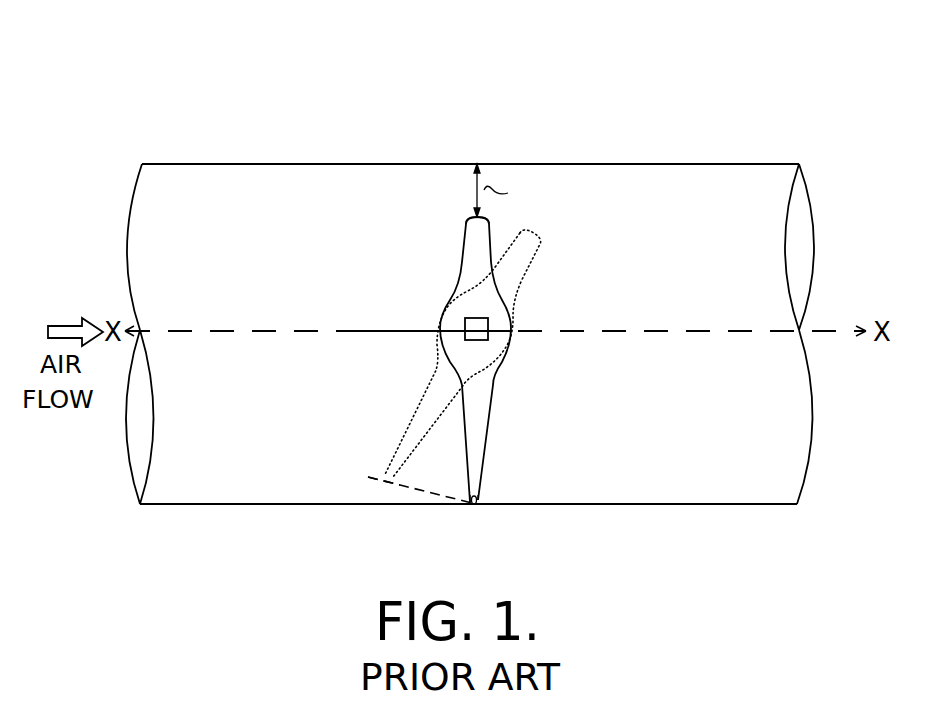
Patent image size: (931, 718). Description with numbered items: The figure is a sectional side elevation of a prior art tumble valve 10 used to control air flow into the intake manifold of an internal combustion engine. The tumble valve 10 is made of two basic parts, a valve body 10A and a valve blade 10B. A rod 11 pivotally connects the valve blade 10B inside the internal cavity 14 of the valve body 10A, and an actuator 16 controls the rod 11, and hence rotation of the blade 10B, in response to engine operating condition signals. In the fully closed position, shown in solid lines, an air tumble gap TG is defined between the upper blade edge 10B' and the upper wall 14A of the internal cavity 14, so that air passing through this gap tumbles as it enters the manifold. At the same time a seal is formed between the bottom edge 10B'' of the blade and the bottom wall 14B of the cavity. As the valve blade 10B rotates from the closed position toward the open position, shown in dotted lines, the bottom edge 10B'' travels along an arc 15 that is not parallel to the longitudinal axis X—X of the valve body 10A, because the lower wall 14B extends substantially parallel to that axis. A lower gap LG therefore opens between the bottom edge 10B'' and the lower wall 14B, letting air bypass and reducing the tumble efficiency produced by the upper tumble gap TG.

The tumble valve 10 is at (562, 116).
The valve body 10A is at (457, 162).
The valve blade 10B is at (468, 312).
The upper blade edge 10B' is at (425, 229).
The bottom edge 10B'' is at (518, 462).
The rod 11 is at (486, 324).
The internal cavity 14 is at (588, 207).
The upper wall 14A is at (490, 163).
The bottom wall 14B is at (511, 504).
The arc 15 is at (412, 490).
The actuator 16 is at (372, 496).